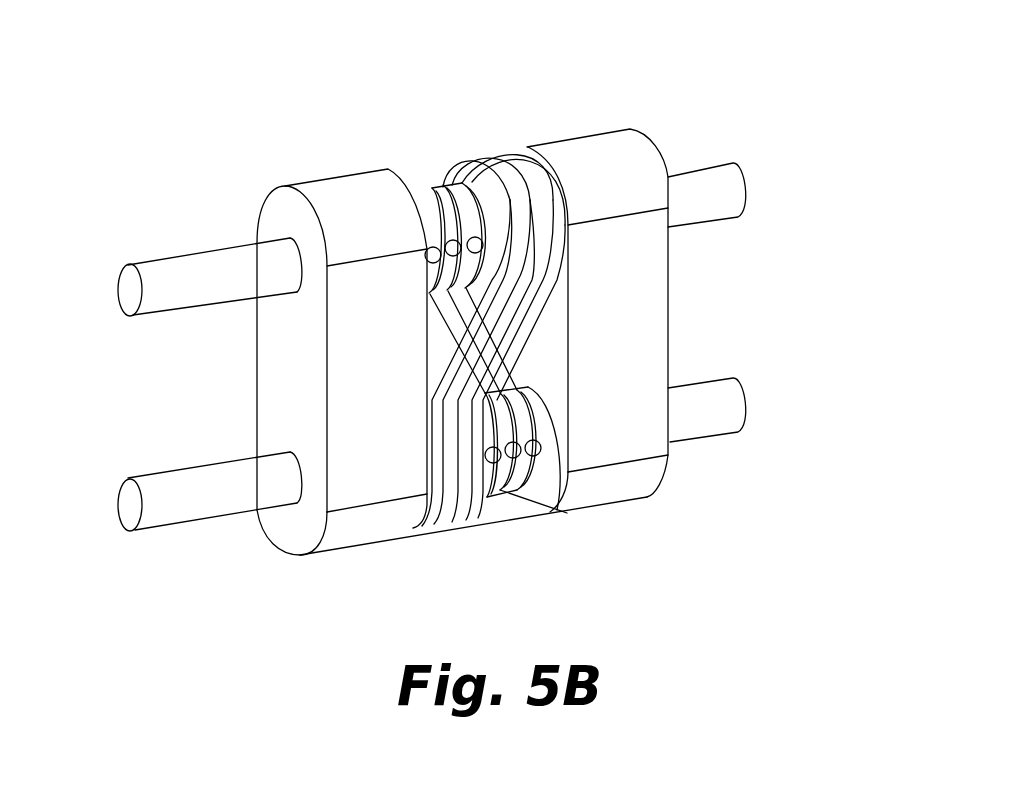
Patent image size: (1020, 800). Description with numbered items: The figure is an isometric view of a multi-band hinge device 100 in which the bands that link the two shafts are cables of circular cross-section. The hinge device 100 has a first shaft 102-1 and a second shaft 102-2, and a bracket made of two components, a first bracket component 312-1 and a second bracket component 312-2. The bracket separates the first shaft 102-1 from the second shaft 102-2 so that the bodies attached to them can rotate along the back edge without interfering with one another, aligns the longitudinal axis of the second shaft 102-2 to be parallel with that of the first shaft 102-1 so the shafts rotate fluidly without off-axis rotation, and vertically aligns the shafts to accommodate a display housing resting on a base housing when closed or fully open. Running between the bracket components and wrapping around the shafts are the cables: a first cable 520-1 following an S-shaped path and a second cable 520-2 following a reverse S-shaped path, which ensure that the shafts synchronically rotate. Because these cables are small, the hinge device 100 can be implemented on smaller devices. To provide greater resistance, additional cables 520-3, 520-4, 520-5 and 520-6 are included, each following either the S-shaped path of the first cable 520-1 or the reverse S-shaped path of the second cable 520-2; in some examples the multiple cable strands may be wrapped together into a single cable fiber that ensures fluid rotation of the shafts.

The multi-band hinge device 100 is at (243, 100).
The bracket component 312-1 is at (342, 198).
The bracket component 312-2 is at (638, 442).
The first shaft 102-1 is at (440, 188).
The second shaft 102-2 is at (543, 488).
The first cable 520-1 is at (422, 528).
The second cable 520-2 is at (524, 172).
The additional cable 520-3 is at (455, 522).
The additional cable 520-4 is at (505, 512).
The additional cable 520-5 is at (460, 177).
The additional cable 520-6 is at (496, 158).